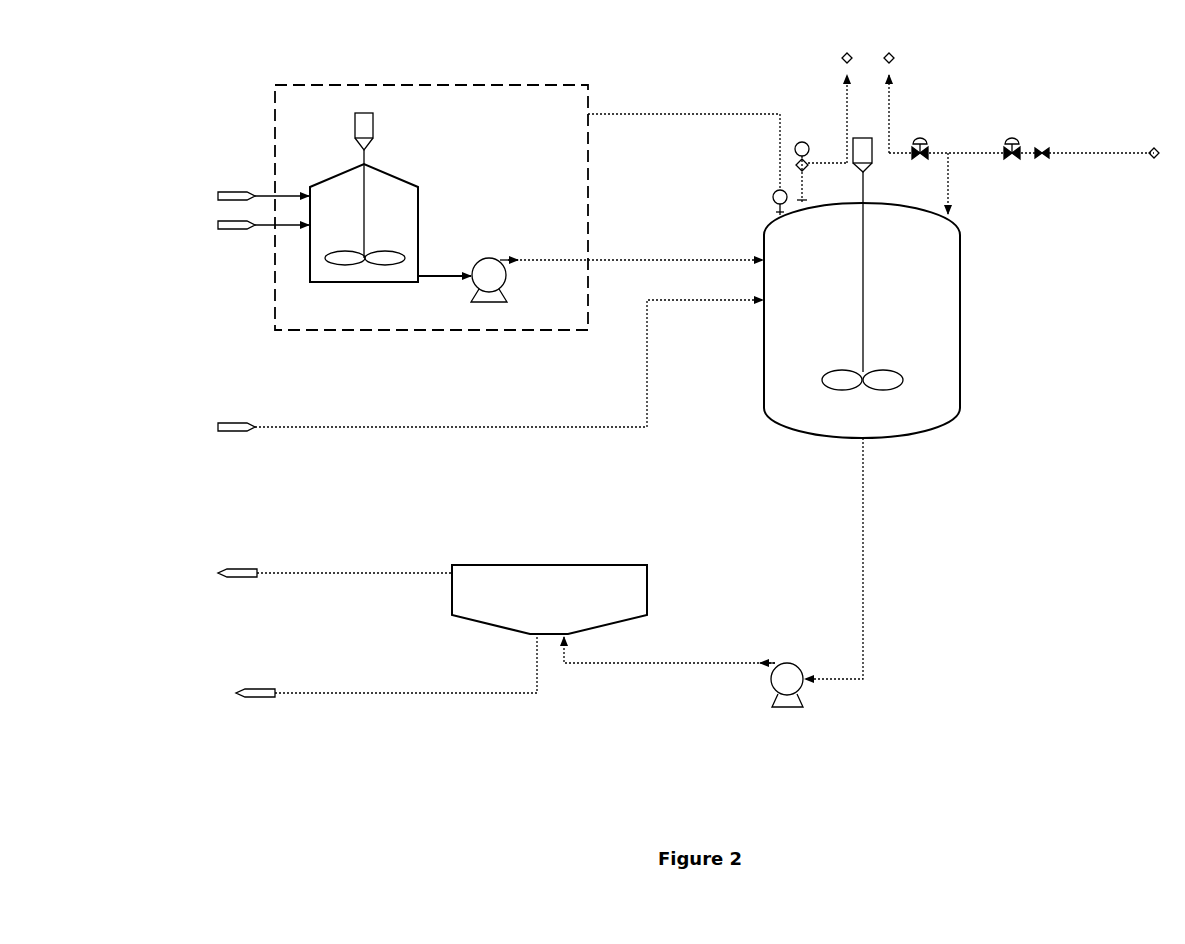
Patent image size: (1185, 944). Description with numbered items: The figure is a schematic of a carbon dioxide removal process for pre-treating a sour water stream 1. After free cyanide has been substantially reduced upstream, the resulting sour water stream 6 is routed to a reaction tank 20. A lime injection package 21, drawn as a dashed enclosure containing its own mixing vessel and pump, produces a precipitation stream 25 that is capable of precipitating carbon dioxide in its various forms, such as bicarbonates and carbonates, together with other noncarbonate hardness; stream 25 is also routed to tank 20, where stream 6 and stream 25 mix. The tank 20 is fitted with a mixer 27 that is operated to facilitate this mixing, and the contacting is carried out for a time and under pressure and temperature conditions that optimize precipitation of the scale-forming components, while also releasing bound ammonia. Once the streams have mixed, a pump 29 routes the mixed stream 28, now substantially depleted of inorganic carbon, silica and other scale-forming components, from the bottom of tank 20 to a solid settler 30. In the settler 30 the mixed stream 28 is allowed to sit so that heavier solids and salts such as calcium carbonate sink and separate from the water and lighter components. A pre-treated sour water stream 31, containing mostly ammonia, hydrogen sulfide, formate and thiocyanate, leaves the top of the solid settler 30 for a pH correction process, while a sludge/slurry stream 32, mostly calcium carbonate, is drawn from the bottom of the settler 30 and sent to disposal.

The sour water stream 1 is at (765, 204).
The sour water stream 6 is at (470, 368).
The reaction tank 20 is at (918, 307).
The lime injection package 21 is at (542, 136).
The precipitation stream 25 is at (631, 247).
The mixer 27 is at (880, 131).
The mixed stream 28 is at (713, 566).
The pump 29 is at (804, 741).
The solid settler 30 is at (567, 607).
The pre-treated sour water stream 31 is at (311, 570).
The sludge/slurry stream 32 is at (354, 669).